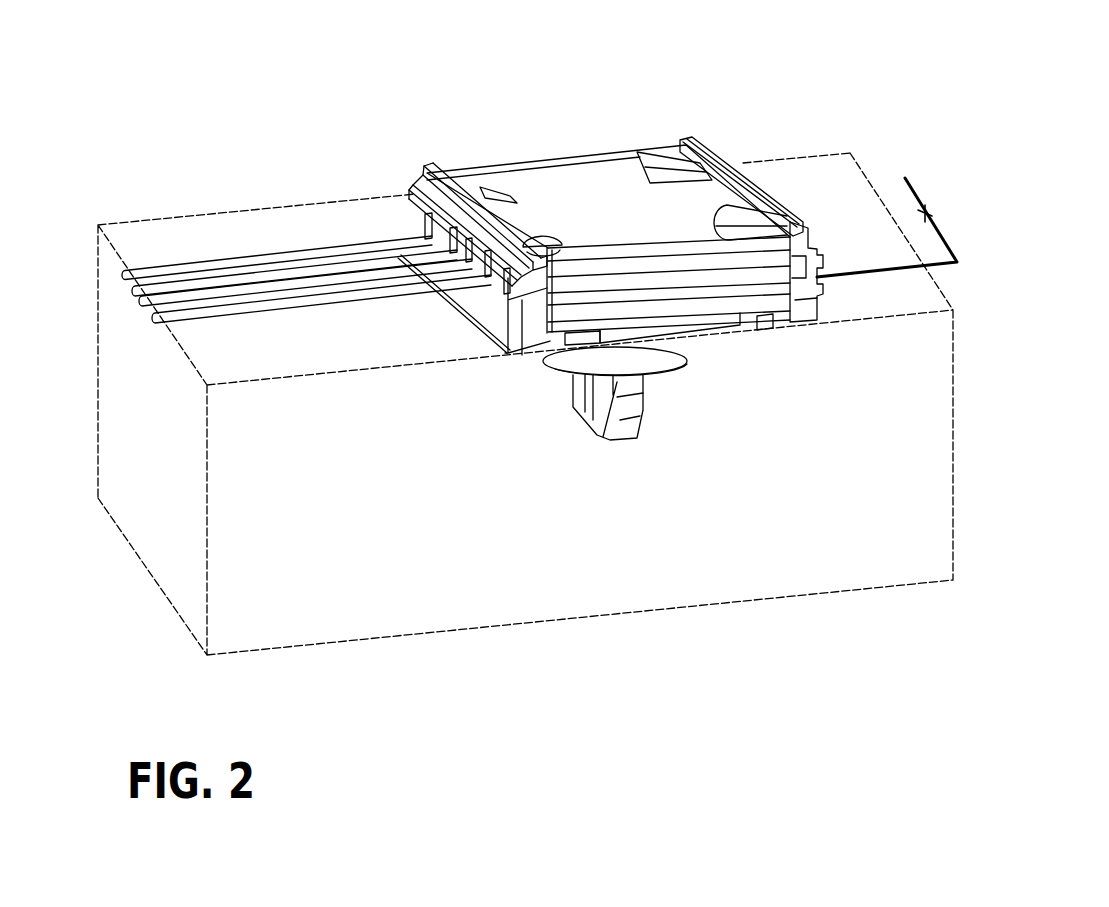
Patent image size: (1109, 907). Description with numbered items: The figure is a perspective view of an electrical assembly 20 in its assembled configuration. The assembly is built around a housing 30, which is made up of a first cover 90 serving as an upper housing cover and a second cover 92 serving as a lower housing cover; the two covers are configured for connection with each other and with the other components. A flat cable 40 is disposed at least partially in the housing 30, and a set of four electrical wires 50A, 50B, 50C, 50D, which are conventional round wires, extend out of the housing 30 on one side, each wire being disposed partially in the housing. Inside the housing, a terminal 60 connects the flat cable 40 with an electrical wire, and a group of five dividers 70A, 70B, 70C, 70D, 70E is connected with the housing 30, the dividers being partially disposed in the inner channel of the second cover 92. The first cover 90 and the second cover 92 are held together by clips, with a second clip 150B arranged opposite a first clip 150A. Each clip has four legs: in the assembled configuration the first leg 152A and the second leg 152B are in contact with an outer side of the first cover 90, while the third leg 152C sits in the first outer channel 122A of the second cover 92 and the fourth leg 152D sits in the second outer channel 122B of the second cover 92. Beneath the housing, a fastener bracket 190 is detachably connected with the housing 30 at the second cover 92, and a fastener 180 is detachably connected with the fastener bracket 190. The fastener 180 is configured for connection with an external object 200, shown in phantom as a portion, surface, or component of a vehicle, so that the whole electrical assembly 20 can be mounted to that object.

The electrical assembly 20 is at (340, 61).
The housing 30 is at (618, 249).
The flat cable 40 is at (887, 203).
The electrical wire 50A is at (158, 317).
The electrical wire 50B is at (142, 301).
The electrical wire 50C is at (137, 293).
The electrical wire 50D is at (122, 276).
The terminal 60 is at (670, 195).
The divider 70A is at (510, 293).
The divider 70B is at (488, 284).
The divider 70C is at (430, 255).
The divider 70D is at (450, 248).
The divider 70E is at (432, 236).
The first cover 90 is at (621, 138).
The second cover 92 is at (508, 323).
The first outer channel 122A is at (754, 315).
The second outer channel 122B is at (578, 344).
The first clip 150A is at (663, 267).
The second clip 150B is at (557, 160).
The first leg 152A is at (730, 212).
The second leg 152B is at (543, 232).
The third leg 152C is at (777, 312).
The fourth leg 152D is at (535, 328).
The fastener 180 is at (635, 395).
The fastener bracket 190 is at (783, 316).
The external object 200 is at (460, 633).